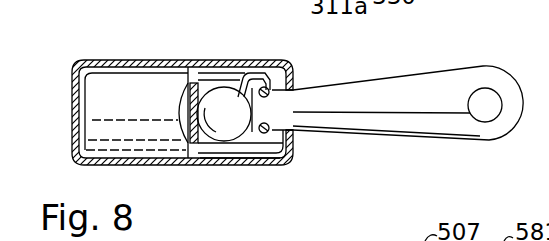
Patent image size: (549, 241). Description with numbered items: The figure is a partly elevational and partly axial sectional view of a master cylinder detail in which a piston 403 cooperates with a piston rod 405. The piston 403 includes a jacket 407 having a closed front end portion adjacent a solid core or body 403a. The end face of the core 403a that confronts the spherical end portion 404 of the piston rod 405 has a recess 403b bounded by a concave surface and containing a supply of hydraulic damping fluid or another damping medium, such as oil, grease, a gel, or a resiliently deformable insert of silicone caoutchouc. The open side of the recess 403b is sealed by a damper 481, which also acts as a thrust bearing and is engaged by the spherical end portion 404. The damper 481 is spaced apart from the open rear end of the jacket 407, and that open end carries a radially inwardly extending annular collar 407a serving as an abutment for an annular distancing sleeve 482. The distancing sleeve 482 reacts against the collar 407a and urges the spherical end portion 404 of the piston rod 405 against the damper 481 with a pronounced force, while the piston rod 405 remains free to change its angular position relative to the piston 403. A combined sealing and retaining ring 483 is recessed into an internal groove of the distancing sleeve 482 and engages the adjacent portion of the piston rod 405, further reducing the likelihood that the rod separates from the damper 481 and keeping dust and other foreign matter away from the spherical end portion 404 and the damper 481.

The piston 403 is at (335, 157).
The solid core 403a is at (90, 90).
The recess 403b is at (185, 98).
The spherical end portion 404 is at (218, 95).
The piston rod 405 is at (445, 118).
The jacket 407 is at (224, 165).
The annular collar 407a is at (297, 152).
The damper 481 is at (190, 160).
The annular distancing sleeve 482 is at (278, 160).
The combined sealing and retaining ring 483 is at (247, 62).